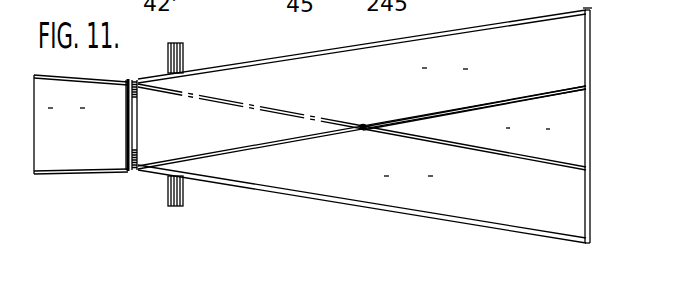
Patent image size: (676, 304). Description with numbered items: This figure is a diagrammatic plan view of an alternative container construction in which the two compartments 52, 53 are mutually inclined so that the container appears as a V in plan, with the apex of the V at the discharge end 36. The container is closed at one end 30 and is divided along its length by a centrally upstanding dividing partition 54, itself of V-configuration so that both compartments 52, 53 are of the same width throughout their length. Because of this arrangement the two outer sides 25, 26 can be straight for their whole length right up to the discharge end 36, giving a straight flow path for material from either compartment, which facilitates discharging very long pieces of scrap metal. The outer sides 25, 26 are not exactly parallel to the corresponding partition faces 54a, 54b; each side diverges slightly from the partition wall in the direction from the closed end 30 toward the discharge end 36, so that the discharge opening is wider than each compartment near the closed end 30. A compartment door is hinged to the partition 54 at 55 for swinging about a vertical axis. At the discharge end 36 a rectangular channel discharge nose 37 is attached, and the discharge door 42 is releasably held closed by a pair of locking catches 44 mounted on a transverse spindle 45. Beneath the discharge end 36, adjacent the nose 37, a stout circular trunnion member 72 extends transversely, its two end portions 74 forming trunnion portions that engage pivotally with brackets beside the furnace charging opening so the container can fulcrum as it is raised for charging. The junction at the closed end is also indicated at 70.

The container side 25 is at (510, 25).
The container side 26 is at (300, 197).
The closed end 30 is at (590, 207).
The discharge end 36 is at (34, 125).
The discharge nose 37 is at (66, 109).
The door 42 is at (139, 141).
The locking catch 44 is at (147, 76).
The spindle 45 is at (127, 135).
The compartment 52 is at (445, 70).
The compartment 53 is at (408, 178).
The dividing partition 54 is at (528, 130).
The partition face 54a is at (508, 100).
The partition face 54b is at (552, 165).
The hinge axis 55 is at (366, 100).
The corner joint 70 is at (585, 23).
The trunnion member 72 is at (183, 205).
The trunnion portion 74 is at (182, 67).